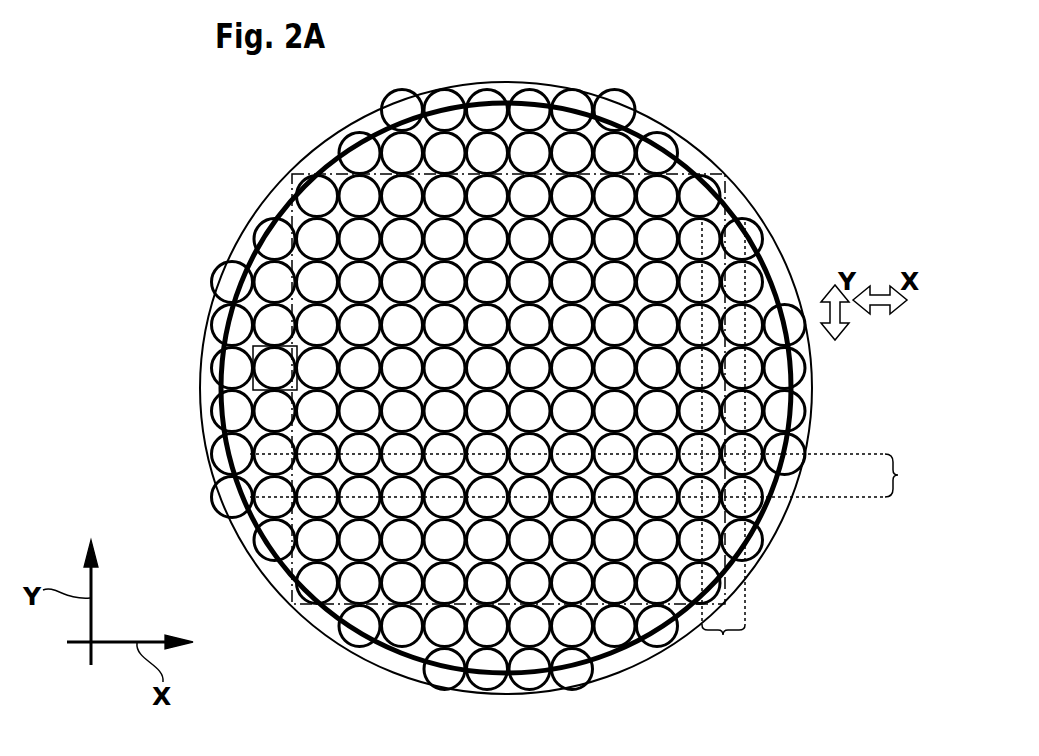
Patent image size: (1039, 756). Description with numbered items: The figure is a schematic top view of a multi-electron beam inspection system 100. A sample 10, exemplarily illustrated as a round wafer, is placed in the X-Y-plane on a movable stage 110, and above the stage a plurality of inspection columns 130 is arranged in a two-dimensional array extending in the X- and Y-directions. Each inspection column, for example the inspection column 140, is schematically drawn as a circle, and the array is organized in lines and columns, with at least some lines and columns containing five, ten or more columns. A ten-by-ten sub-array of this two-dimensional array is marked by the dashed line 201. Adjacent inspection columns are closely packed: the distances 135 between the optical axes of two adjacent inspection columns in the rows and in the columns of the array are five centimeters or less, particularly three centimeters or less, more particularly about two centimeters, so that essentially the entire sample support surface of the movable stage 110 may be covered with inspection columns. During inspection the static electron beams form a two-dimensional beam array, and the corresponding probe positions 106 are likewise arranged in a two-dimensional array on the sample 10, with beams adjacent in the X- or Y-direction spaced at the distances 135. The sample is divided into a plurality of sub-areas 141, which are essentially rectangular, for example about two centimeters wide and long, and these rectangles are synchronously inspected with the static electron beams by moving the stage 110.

The sample 10 is at (730, 210).
The multi-electron beam inspection system 100 is at (866, 150).
The probe positions 106 is at (352, 276).
The movable stage 110 is at (797, 293).
The plurality of inspection columns 130 is at (703, 172).
The distances 135 is at (596, 443).
The inspection column 140 is at (258, 358).
The sub-areas 141 is at (253, 373).
The dashed line 201 is at (290, 187).